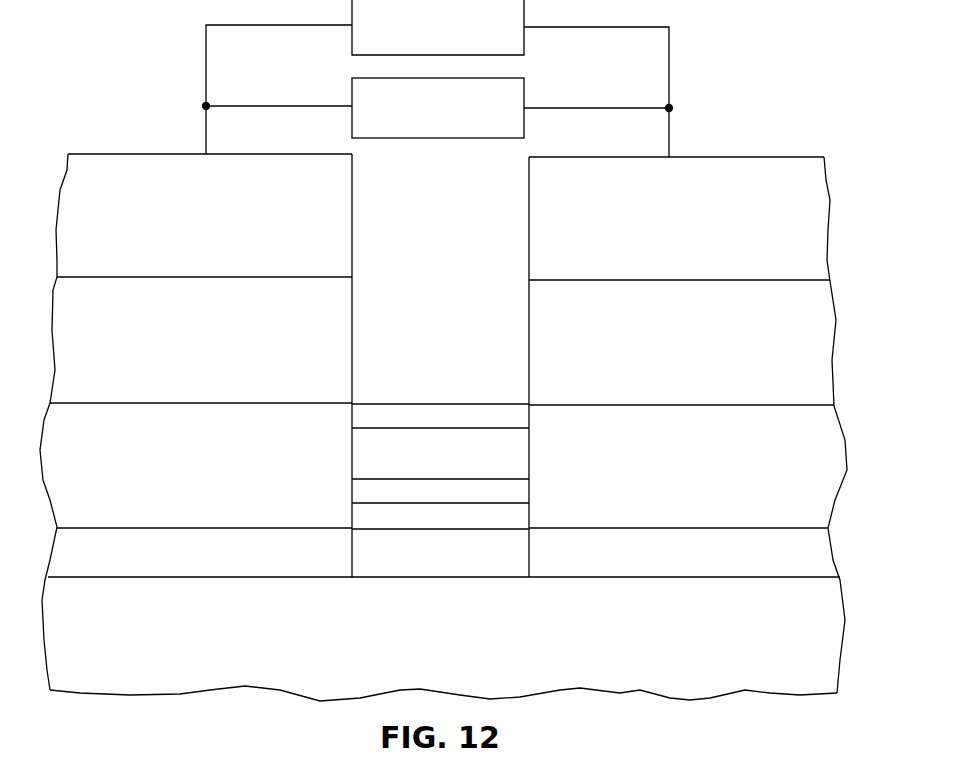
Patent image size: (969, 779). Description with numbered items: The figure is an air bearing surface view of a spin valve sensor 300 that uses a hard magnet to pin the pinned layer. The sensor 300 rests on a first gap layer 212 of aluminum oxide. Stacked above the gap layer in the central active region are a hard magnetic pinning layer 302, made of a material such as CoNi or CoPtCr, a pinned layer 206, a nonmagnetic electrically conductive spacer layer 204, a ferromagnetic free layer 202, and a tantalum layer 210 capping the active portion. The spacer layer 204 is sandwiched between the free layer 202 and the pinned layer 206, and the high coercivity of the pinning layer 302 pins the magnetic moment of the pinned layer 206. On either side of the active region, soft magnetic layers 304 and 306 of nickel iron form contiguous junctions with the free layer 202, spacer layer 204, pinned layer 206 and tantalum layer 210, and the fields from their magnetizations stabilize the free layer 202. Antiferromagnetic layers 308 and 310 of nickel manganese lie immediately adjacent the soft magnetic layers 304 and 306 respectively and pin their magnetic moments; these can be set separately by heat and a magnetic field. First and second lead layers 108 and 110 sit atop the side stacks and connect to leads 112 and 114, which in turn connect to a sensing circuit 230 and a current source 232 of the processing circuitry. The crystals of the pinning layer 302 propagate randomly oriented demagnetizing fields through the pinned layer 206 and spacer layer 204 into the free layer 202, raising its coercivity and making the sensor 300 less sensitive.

The sensor 300 is at (718, 62).
The first lead layer 108 is at (105, 162).
The second lead layer 110 is at (784, 169).
The lead 112 is at (206, 58).
The lead 114 is at (669, 132).
The sensing circuit 230 is at (524, 42).
The current source 232 is at (447, 140).
The soft magnetic layer 304 is at (104, 413).
The soft magnetic layer 306 is at (783, 418).
The antiferromagnetic layer 308 is at (352, 306).
The antiferromagnetic layer 310 is at (529, 362).
The tantalum layer 210 is at (529, 420).
The free layer 202 is at (529, 455).
The spacer layer 204 is at (529, 487).
The pinned layer 206 is at (529, 512).
The pinning layer 302 is at (529, 553).
The first gap layer 212 is at (702, 697).